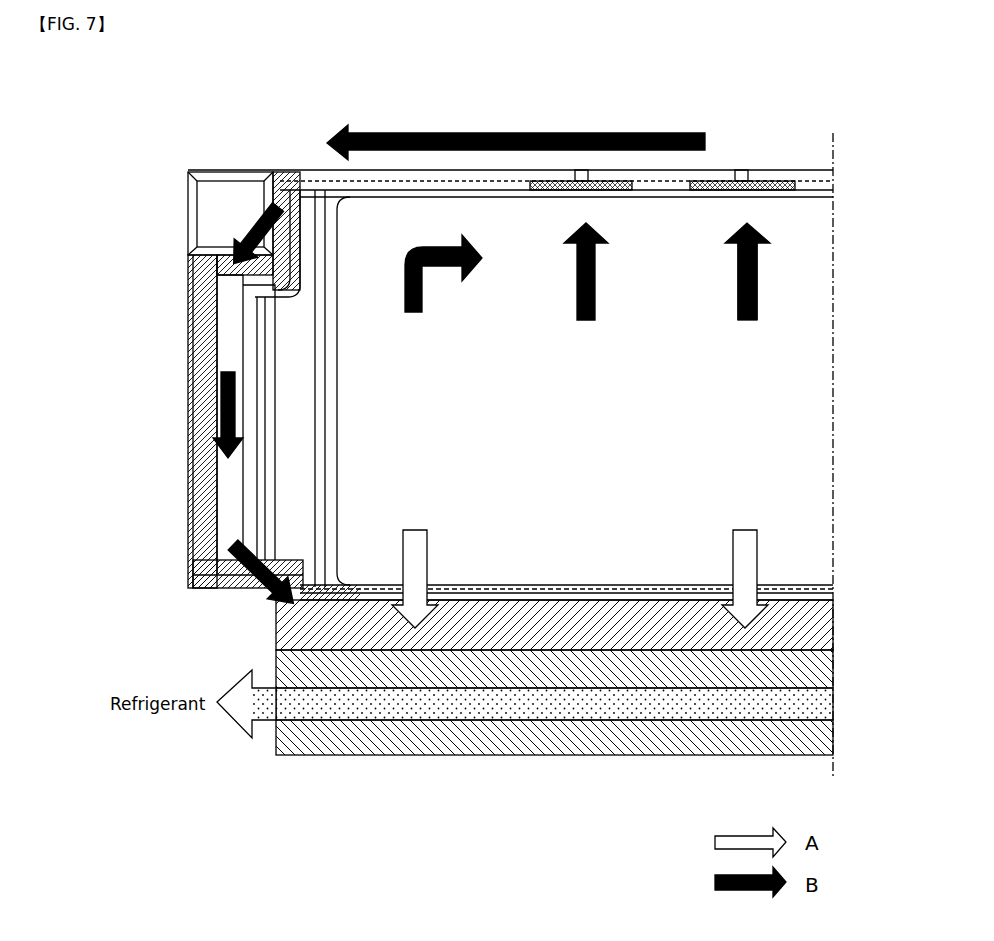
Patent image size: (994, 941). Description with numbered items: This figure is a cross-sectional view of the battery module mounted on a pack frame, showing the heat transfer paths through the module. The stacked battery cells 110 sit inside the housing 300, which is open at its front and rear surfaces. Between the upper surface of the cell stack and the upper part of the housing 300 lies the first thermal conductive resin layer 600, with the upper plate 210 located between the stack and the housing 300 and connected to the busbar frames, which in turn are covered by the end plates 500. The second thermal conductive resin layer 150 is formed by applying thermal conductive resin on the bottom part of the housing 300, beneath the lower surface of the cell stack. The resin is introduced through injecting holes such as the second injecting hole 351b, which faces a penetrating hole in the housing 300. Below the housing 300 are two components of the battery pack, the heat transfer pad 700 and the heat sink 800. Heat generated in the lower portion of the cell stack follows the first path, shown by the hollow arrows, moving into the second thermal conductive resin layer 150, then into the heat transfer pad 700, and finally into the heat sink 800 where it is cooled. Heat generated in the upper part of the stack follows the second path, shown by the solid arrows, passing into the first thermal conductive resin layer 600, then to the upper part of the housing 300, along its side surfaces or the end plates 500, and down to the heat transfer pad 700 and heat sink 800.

The battery cell 110 is at (808, 464).
The second thermal conductive resin layer 150 is at (805, 585).
The upper plate 210 is at (410, 190).
The housing 300 is at (785, 170).
The second injecting hole 351b is at (586, 170).
The end plate 500 is at (198, 525).
The first thermal conductive resin layer 600 is at (610, 192).
The heat transfer pad 700 is at (808, 630).
The heat sink 800 is at (806, 735).